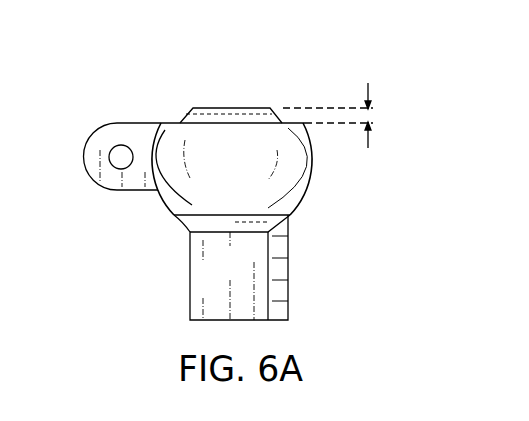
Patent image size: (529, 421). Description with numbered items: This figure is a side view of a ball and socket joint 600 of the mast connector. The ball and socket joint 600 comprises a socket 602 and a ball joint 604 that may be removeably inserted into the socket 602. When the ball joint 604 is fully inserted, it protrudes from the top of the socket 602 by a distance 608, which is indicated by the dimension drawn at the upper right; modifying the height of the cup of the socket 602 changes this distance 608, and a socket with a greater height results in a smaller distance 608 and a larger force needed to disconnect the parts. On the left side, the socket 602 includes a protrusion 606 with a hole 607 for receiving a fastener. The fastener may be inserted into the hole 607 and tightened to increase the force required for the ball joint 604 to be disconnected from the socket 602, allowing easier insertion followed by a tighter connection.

The ball and socket joint 600 is at (108, 68).
The socket 602 is at (273, 184).
The ball joint 604 is at (225, 108).
The protrusion 606 is at (95, 135).
The hole 607 is at (118, 160).
The distance 608 is at (368, 93).